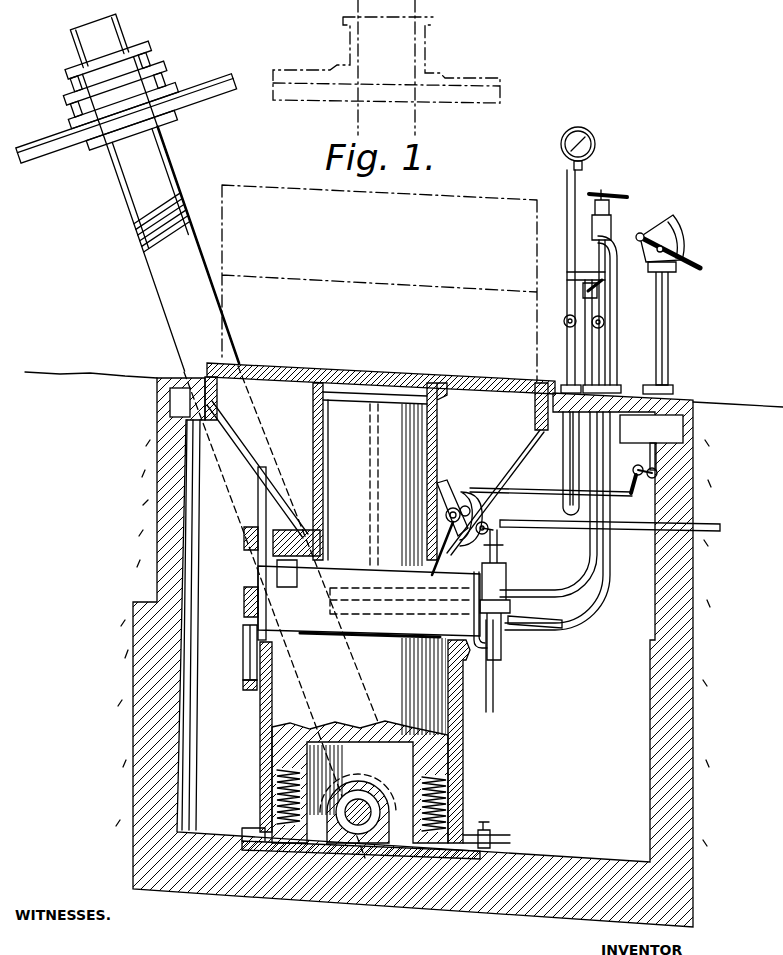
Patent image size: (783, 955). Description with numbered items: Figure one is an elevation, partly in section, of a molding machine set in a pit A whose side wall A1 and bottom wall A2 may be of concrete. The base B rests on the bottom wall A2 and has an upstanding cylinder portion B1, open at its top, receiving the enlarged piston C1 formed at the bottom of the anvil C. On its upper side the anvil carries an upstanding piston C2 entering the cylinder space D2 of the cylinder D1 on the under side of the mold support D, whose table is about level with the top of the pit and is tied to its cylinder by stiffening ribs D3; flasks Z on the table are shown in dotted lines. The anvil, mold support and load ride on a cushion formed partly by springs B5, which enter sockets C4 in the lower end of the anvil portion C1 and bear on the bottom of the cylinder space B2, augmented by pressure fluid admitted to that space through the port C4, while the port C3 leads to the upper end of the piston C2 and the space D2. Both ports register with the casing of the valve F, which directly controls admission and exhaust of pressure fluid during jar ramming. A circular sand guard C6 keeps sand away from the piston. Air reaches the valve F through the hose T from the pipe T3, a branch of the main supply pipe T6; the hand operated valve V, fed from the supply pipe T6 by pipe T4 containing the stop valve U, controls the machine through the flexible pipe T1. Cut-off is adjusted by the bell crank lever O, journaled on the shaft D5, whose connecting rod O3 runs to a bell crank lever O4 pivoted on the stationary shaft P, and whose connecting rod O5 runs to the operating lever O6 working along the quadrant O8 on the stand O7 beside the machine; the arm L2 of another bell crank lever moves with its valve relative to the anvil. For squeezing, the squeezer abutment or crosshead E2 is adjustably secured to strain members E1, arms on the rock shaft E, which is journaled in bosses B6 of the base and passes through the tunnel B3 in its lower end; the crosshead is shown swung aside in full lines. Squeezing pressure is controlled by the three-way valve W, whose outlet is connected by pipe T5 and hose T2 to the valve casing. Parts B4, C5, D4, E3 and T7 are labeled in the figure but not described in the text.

The pit A is at (187, 692).
The side wall A1 is at (145, 745).
The bottom wall A2 is at (312, 845).
The base B is at (245, 860).
The cylinder portion B1 is at (467, 720).
The cylinder space B2 is at (317, 843).
The tunnel B3 is at (392, 845).
The drain cock B4 is at (462, 834).
The springs B5 is at (272, 810).
The bosses B6 is at (407, 766).
The anvil C is at (369, 601).
The enlarged piston C1 is at (462, 690).
The upstanding piston C2 is at (354, 485).
The port C3 is at (368, 468).
The port C4 is at (371, 663).
The pipe connection C5 is at (488, 673).
The circular sand guard C6 is at (241, 660).
The mold support D is at (325, 380).
The cylinder D1 is at (320, 447).
The cylinder space D2 is at (387, 368).
The stiffening ribs D3 is at (194, 500).
The lever arm D4 is at (455, 550).
The shaft D5 is at (372, 552).
The rock shaft E is at (362, 834).
The strain members E1 is at (186, 322).
The squeezer abutment E2 is at (90, 98).
The cross bar E3 is at (200, 78).
The flasks Z is at (222, 287).
The valve F is at (508, 633).
The arm L2 is at (498, 500).
The bell crank lever O is at (455, 488).
The connecting rod O3 is at (525, 488).
The bell crank lever O4 is at (688, 523).
The connecting rod O5 is at (684, 432).
The operating lever O6 is at (678, 250).
The stand O7 is at (668, 318).
The quadrant O8 is at (674, 217).
The stationary shaft P is at (638, 465).
The hose T is at (598, 555).
The flexible pipe T1 is at (590, 582).
The hose T2 is at (568, 556).
The pipe T3 is at (608, 294).
The pipe T4 is at (601, 341).
The pipe T5 is at (593, 379).
The main air supply pipe T6 is at (565, 335).
The outlet pipe T7 is at (563, 626).
The stop valve U is at (604, 321).
The hand operated valve V is at (604, 233).
The three-way valve W is at (585, 295).